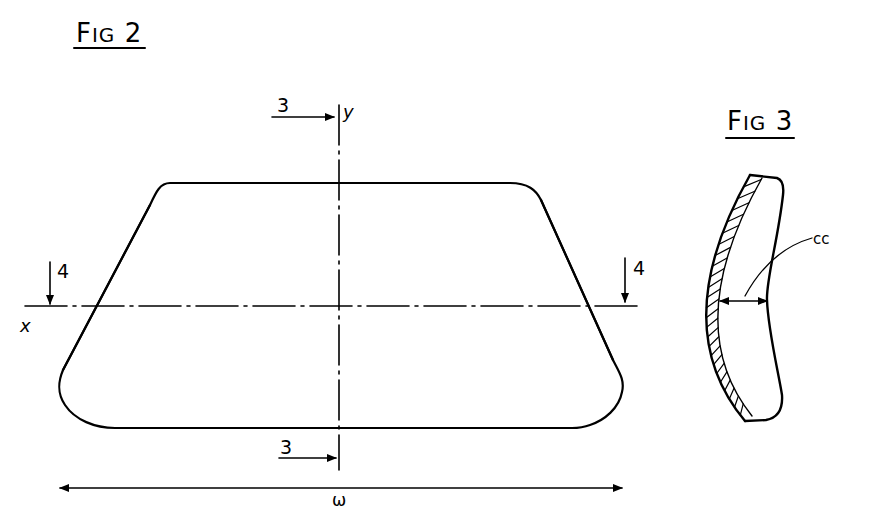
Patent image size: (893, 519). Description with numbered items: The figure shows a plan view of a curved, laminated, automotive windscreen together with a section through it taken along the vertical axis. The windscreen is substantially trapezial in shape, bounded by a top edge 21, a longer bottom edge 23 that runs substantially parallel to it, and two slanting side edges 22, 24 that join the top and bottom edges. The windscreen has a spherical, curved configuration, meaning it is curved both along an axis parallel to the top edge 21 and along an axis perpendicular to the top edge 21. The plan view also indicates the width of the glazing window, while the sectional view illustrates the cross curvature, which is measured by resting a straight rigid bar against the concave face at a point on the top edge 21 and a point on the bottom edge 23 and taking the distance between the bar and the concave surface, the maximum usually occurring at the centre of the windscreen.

The top edge 21 is at (410, 181).
The side edge 22 is at (130, 238).
The bottom edge 23 is at (446, 430).
The side edge 24 is at (570, 262).